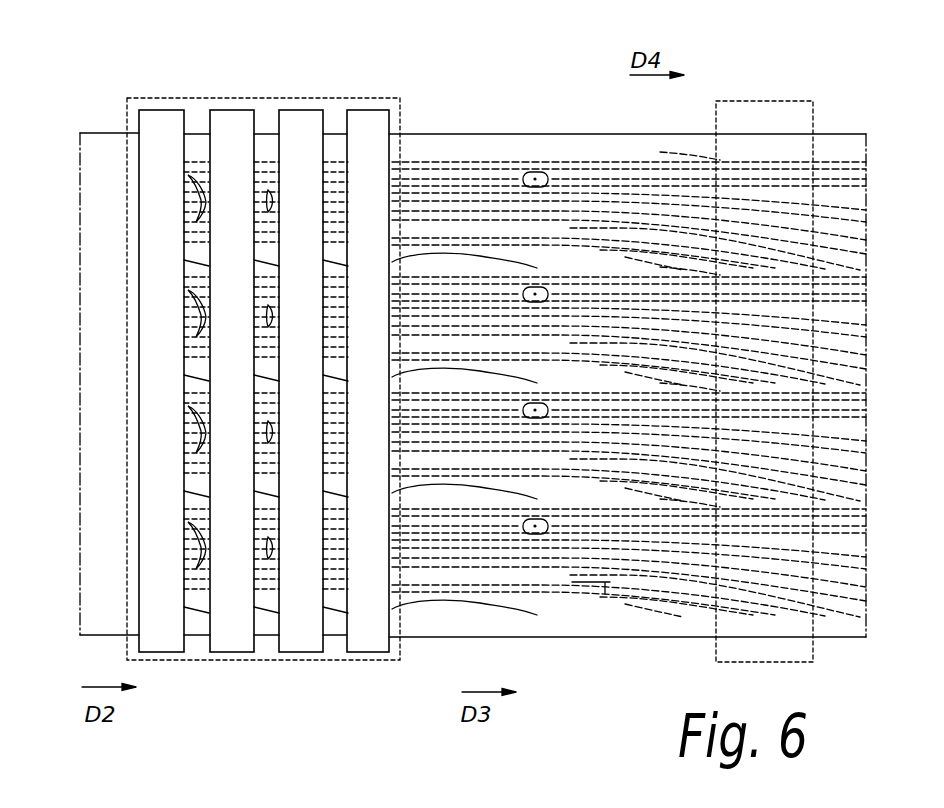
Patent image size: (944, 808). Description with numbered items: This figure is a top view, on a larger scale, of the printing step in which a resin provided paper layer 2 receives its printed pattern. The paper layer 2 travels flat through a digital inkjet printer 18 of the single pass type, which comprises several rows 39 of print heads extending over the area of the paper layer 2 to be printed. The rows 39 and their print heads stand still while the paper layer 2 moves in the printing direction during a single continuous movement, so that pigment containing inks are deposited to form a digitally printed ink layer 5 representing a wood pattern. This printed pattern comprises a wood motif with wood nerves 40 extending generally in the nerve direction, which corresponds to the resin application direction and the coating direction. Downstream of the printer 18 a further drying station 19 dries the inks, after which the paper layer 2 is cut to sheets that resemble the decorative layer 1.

The decorative layer 1 is at (483, 134).
The paper layer 2 is at (100, 133).
The digitally printed ink layer 5 is at (592, 192).
The digital inkjet printer 18 is at (305, 98).
The drying station 19 is at (813, 122).
The rows of print heads 39 is at (300, 127).
The wood nerves 40 is at (617, 596).